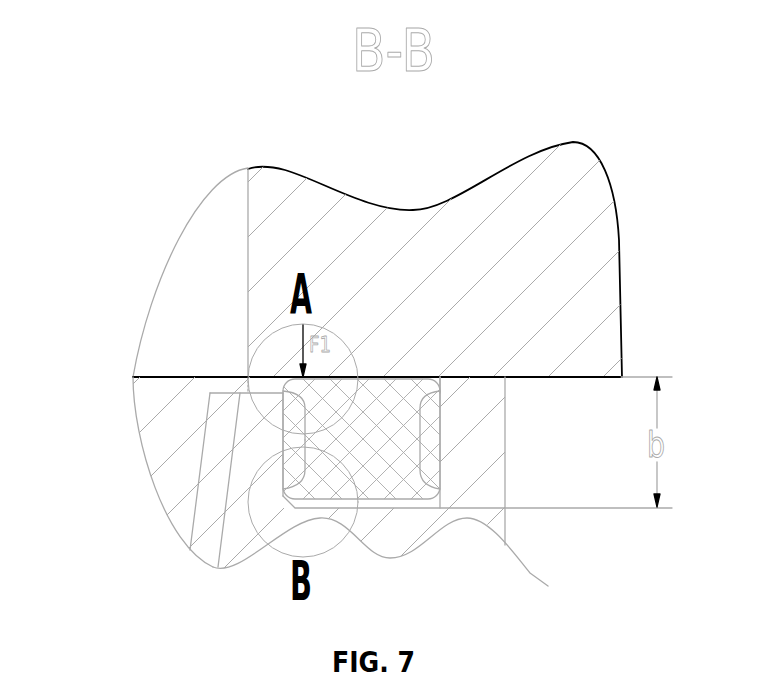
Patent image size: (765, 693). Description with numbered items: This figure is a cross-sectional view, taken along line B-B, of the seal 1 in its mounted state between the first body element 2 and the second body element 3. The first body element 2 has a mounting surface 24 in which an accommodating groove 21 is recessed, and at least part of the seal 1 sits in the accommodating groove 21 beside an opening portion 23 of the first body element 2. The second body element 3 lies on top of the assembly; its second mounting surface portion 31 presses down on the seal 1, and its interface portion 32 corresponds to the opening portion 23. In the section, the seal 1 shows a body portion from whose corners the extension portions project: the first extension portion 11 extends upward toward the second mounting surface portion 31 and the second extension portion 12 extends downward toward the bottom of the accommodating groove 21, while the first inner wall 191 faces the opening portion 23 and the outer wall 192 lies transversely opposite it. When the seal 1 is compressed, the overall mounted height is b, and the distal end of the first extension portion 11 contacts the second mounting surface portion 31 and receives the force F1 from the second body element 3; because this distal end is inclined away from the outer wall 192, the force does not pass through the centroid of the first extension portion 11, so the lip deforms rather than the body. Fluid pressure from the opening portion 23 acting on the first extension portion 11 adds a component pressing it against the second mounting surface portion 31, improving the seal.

The seal 1 is at (364, 435).
The first body element 2 is at (336, 480).
The second body element 3 is at (397, 267).
The first extension portion 11 is at (294, 378).
The second extension portion 12 is at (296, 500).
The accommodating groove 21 is at (442, 477).
The opening portion 23 is at (173, 380).
The mounting surface 24 is at (485, 380).
The second mounting surface portion 31 is at (524, 378).
The interface portion 32 is at (173, 375).
The first inner wall 191 is at (305, 450).
The outer wall 192 is at (422, 450).